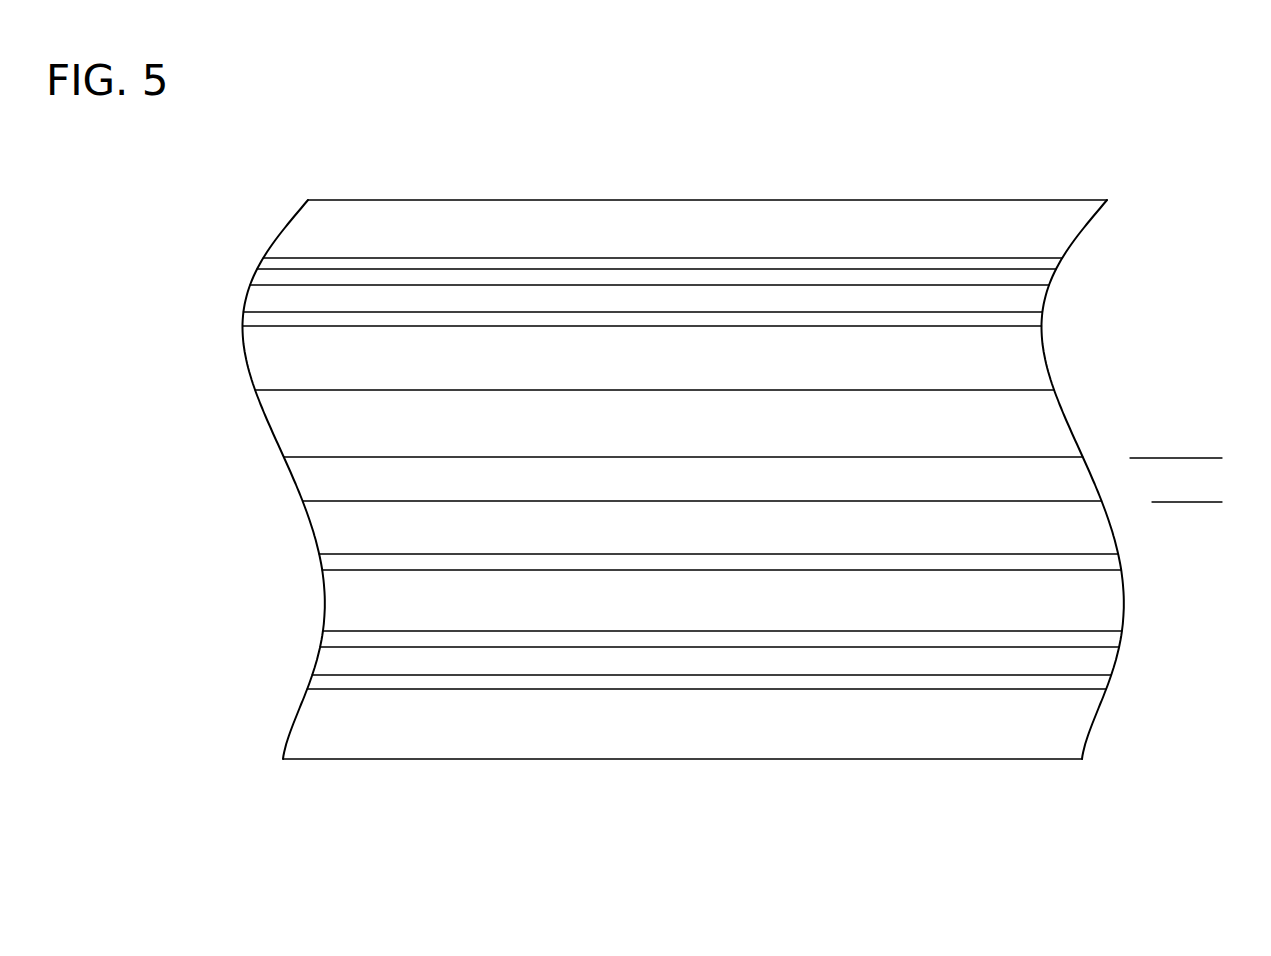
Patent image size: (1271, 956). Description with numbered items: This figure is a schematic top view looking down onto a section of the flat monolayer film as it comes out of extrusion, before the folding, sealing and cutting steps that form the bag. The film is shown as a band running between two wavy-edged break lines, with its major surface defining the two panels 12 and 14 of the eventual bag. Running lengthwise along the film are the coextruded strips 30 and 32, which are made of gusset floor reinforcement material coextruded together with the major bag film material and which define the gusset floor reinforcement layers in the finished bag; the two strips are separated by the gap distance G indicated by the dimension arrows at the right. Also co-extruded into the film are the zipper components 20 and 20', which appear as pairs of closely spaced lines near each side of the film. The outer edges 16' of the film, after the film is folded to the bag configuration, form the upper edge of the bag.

The panel 12 is at (1000, 343).
The panel 14 is at (389, 582).
The outer edges of the film 16' is at (695, 482).
The zipper component 20 is at (644, 480).
The zipper component 20' is at (635, 466).
The coextruded strip 30 is at (1012, 408).
The coextruded strip 32 is at (1087, 562).
The gap distance G is at (1213, 395).